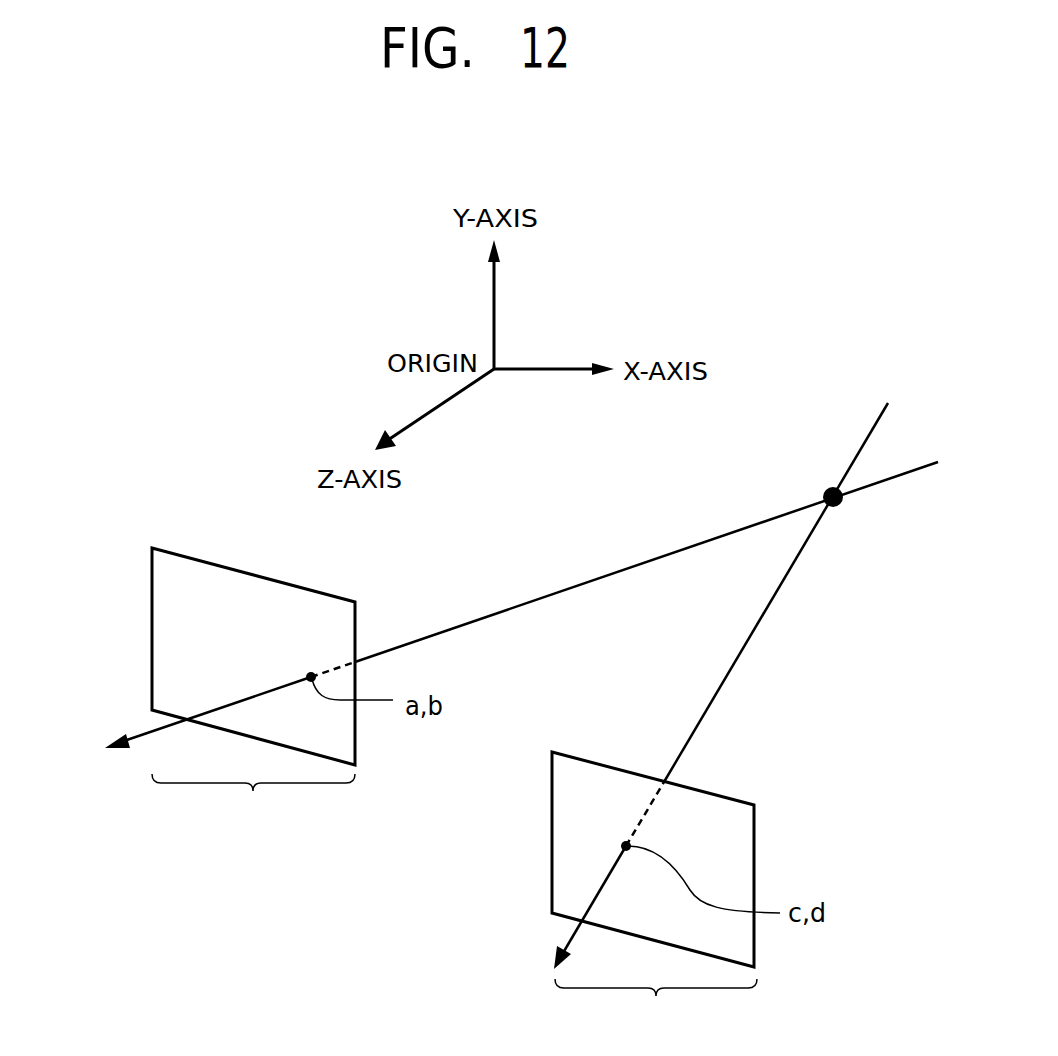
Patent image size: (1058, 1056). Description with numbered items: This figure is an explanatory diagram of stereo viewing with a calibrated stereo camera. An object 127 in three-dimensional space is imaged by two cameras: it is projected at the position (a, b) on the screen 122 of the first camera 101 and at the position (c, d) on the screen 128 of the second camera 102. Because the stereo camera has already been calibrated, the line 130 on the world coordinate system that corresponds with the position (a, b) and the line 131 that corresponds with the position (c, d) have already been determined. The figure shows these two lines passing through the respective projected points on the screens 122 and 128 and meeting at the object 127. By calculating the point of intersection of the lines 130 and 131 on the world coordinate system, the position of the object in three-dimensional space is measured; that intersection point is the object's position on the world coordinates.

The first camera 101 is at (253, 806).
The second camera 102 is at (656, 1011).
The screen of the first camera 122 is at (193, 556).
The object 127 is at (829, 488).
The screen of the second camera 128 is at (756, 848).
The line corresponding with position (a, b) 130 is at (602, 575).
The line corresponding with position (c, d) 131 is at (738, 653).